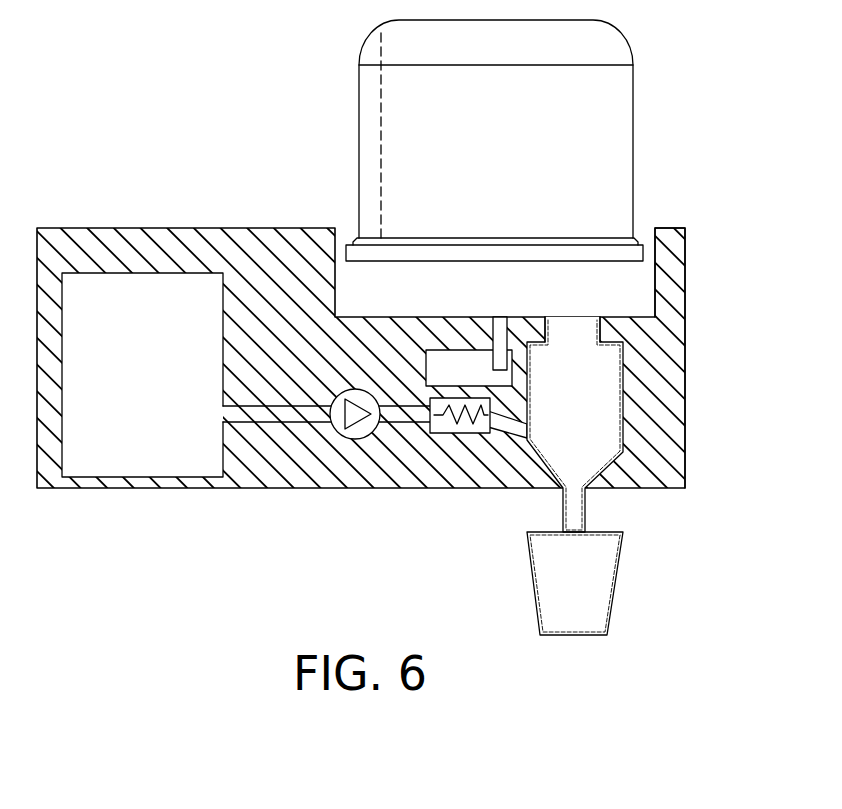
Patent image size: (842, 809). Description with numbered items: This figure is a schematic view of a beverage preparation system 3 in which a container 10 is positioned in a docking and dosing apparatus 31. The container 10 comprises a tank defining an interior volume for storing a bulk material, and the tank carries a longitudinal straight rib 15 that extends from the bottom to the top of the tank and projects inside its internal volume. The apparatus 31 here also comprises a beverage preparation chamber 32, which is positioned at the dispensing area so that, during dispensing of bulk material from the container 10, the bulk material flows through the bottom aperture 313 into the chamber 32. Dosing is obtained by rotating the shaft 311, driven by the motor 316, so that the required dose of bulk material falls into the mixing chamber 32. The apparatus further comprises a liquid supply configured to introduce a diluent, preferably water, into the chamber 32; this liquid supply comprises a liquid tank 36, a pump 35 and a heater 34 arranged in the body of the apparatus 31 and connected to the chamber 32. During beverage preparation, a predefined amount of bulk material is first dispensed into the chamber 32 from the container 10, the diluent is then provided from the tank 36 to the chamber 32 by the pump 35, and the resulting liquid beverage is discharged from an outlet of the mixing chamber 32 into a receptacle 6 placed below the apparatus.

The system 3 is at (188, 82).
The container 10 is at (633, 122).
The rib 15 is at (381, 142).
The docking and dosing apparatus 31 is at (677, 265).
The shaft 311 is at (491, 325).
The bottom aperture 313 is at (587, 328).
The beverage preparation chamber 32 is at (607, 405).
The motor 316 is at (426, 363).
The heater 34 is at (458, 434).
The pump 35 is at (352, 439).
The liquid tank 36 is at (145, 488).
The receptacle 6 is at (613, 592).